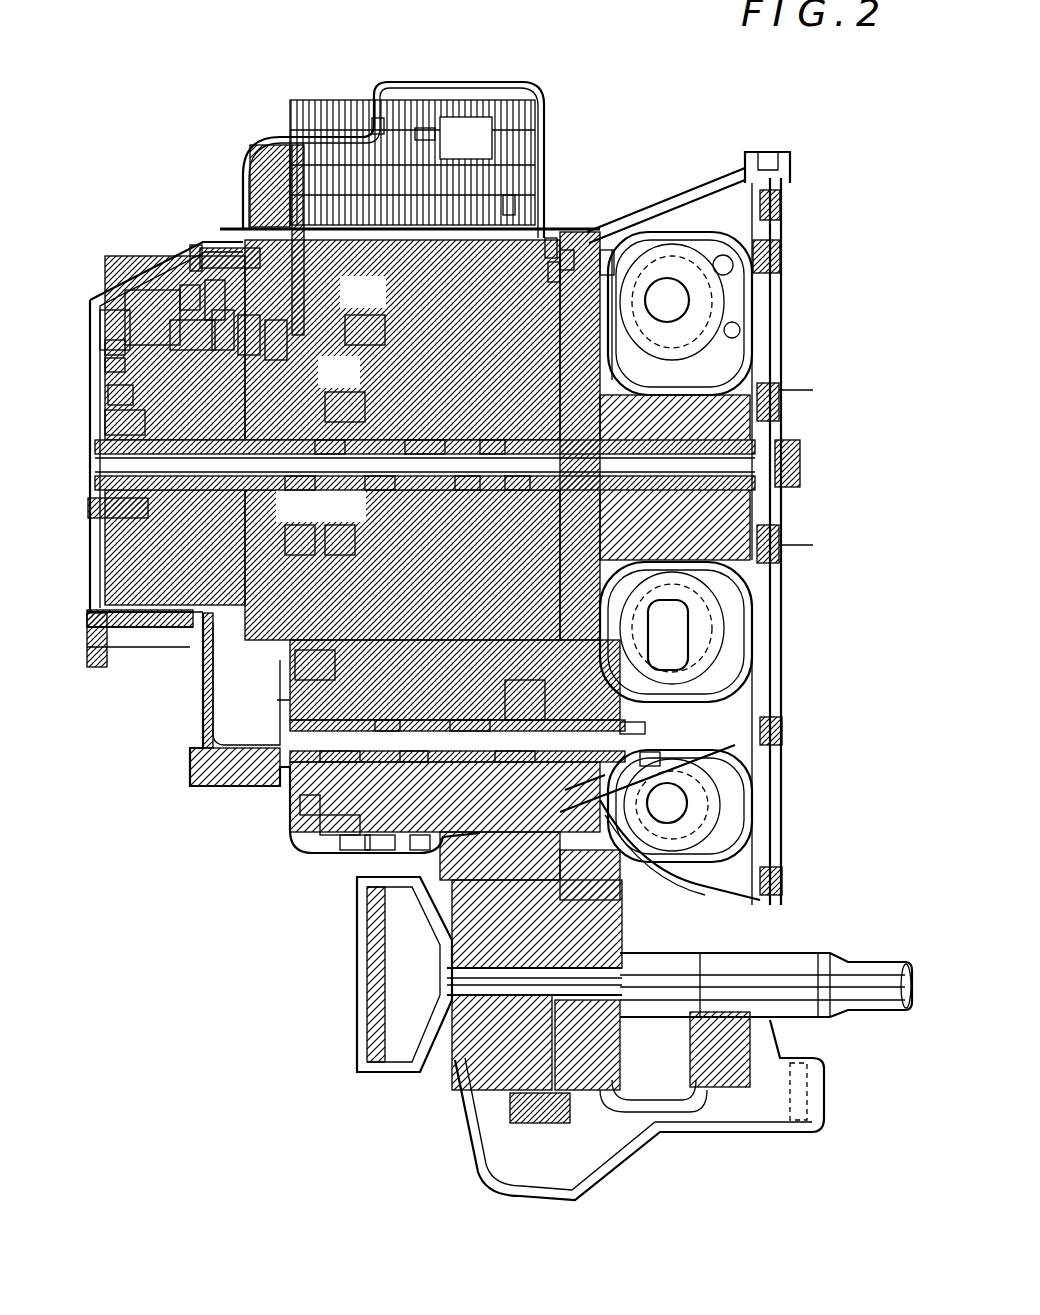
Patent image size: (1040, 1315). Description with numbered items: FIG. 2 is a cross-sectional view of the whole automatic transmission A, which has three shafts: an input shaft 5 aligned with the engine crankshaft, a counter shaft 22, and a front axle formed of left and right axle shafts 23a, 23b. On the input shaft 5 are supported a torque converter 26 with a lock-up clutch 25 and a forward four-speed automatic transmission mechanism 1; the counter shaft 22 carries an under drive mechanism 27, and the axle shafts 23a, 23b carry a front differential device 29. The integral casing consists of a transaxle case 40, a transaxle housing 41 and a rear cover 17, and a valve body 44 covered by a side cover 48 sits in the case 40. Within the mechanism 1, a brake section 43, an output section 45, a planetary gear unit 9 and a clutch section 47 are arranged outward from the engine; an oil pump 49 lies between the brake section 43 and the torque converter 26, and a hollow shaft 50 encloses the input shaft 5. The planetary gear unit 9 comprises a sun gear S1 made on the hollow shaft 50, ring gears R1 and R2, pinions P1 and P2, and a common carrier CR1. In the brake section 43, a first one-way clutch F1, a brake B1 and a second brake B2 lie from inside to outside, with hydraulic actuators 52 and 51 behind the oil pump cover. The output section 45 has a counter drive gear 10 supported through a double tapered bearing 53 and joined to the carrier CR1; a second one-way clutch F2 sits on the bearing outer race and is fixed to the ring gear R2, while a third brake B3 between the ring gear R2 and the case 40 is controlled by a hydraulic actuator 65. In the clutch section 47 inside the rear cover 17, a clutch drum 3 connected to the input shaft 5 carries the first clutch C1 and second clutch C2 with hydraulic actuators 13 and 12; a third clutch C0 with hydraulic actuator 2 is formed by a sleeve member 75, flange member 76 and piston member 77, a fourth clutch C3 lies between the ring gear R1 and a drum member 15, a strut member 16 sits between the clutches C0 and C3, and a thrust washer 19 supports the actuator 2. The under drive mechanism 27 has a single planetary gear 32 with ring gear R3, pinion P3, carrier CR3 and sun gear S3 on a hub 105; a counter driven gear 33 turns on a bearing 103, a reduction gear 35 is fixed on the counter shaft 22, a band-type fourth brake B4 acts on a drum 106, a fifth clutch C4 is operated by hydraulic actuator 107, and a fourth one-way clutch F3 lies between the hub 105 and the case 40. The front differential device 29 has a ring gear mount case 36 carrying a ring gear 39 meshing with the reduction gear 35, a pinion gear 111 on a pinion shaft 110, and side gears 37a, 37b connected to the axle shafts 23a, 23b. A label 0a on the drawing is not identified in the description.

The four speed automatic transmission mechanism 1 is at (50, 378).
The hydraulic actuator for the third clutch 2 is at (117, 320).
The clutch drum 3 is at (190, 290).
The input shaft 5 is at (776, 455).
The planetary gear unit 9 is at (270, 215).
The counter drive gear 10 is at (458, 125).
The hydraulic actuator for the second clutch 12 is at (140, 452).
The hydraulic actuator for the first clutch 13 is at (112, 418).
The drum member 15 is at (185, 300).
The strut member 16 is at (212, 285).
The rear cover 17 is at (90, 328).
The thrust washer 19 is at (806, 390).
The counter shaft 22 is at (628, 724).
The left front axle shaft 23a is at (403, 1057).
The right front axle shaft 23b is at (867, 1017).
The lock-up clutch 25 is at (770, 246).
The torque converter 26 is at (720, 214).
The under drive mechanism 27 is at (238, 722).
The front differential device 29 is at (694, 894).
The single planetary gear 32 is at (422, 855).
The counter driven gear 33 is at (532, 640).
The reduction gear 35 is at (650, 755).
The ring gear mount case 36 is at (558, 868).
The left side gear 37a is at (573, 1092).
The right side gear 37b is at (730, 1062).
The ring gear 39 is at (540, 1160).
The transaxle case 40 is at (550, 240).
The transaxle housing 41 is at (710, 185).
The brake section 43 is at (566, 248).
The valve body 44 is at (365, 165).
The output section 45 is at (507, 198).
The clutch section 47 is at (210, 226).
The side cover 48 is at (318, 138).
The oil pump 49 is at (638, 290).
The hollow shaft 50 is at (329, 455).
The hydraulic actuator for the second brake 51 is at (578, 250).
The hydraulic actuator for the first brake 52 is at (655, 255).
The double tapered bearing 53 is at (492, 457).
The hydraulic actuator 65 is at (425, 132).
The sleeve member 75 is at (112, 392).
The flange member 76 is at (112, 362).
The piston member 77 is at (110, 353).
The bearing 103 is at (515, 742).
The hub 105 is at (340, 742).
The drum 106 is at (353, 850).
The hydraulic actuator for the fifth clutch 107 is at (300, 648).
The pinion shaft 110 is at (640, 1048).
The pinion gear 111 is at (677, 1032).
The automatic transmission A is at (160, 176).
The first brake B1 is at (606, 252).
The second brake B2 is at (553, 262).
The third brake B3 is at (362, 316).
The fourth brake B4 is at (373, 848).
The third clutch C0 is at (165, 300).
The first clutch C1 is at (246, 322).
The second clutch C2 is at (220, 318).
The fourth clutch C3 is at (275, 328).
The fifth clutch C4 is at (327, 830).
The carrier CR1 is at (423, 452).
The carrier CR3 is at (470, 733).
The first one-way clutch F1 is at (516, 470).
The second one-way clutch F2 is at (376, 118).
The fourth one-way clutch F3 is at (305, 803).
The first pinion P1 is at (380, 470).
The second pinion P2 is at (339, 523).
The pinion P3 is at (414, 742).
The ring gear R1 is at (299, 523).
The ring gear R2 is at (340, 394).
The ring gear R3 is at (505, 860).
The sun gear S1 is at (299, 468).
The sun gear S3 is at (389, 733).
The oil passage 0a is at (466, 470).